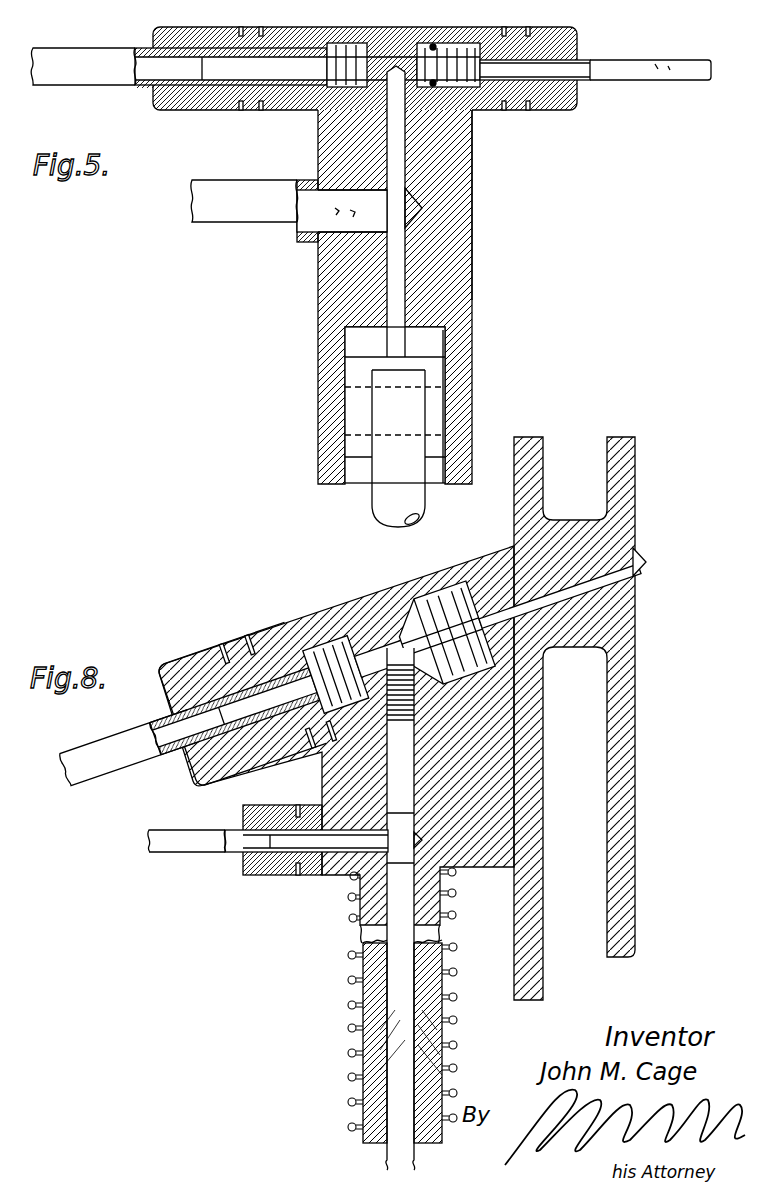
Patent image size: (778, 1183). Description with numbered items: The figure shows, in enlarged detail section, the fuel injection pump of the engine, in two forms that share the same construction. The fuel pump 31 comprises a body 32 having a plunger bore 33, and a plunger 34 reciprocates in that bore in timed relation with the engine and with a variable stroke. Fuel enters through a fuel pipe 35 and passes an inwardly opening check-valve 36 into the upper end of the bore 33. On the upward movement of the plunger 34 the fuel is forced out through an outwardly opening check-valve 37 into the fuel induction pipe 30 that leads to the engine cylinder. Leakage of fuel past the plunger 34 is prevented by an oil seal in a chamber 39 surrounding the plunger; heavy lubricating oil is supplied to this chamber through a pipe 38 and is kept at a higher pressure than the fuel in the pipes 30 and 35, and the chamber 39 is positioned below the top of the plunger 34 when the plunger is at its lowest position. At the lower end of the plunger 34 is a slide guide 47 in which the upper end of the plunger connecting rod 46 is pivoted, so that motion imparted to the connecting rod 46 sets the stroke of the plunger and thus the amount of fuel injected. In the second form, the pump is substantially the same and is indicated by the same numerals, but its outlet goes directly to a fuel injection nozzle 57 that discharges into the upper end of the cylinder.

In FIG. 5, the fuel induction pipe 30 is at (648, 67).
In FIG. 5, the fuel pump 31 is at (472, 165).
In FIG. 8, the fuel pump 31 is at (477, 857).
In FIG. 5, the body 32 is at (443, 260).
In FIG. 8, the body 32 is at (343, 775).
In FIG. 5, the plunger bore 33 is at (387, 103).
In FIG. 8, the plunger bore 33 is at (418, 655).
In FIG. 5, the plunger 34 is at (393, 302).
In FIG. 8, the plunger 34 is at (400, 783).
In FIG. 5, the fuel pipe 35 is at (110, 65).
In FIG. 8, the fuel pipe 35 is at (142, 748).
In FIG. 5, the inwardly opening check-valve 36 is at (327, 63).
In FIG. 8, the inwardly opening check-valve 36 is at (333, 676).
In FIG. 5, the outwardly opening check-valve 37 is at (433, 43).
In FIG. 8, the outwardly opening check-valve 37 is at (425, 622).
In FIG. 5, the pipe 38 is at (257, 217).
In FIG. 8, the pipe 38 is at (192, 840).
In FIG. 5, the chamber 39 is at (410, 210).
In FIG. 8, the chamber 39 is at (418, 840).
In FIG. 5, the plunger connecting rod 46 is at (388, 495).
In FIG. 5, the slide guide 47 is at (353, 373).
In FIG. 8, the fuel injection nozzle 57 is at (612, 570).